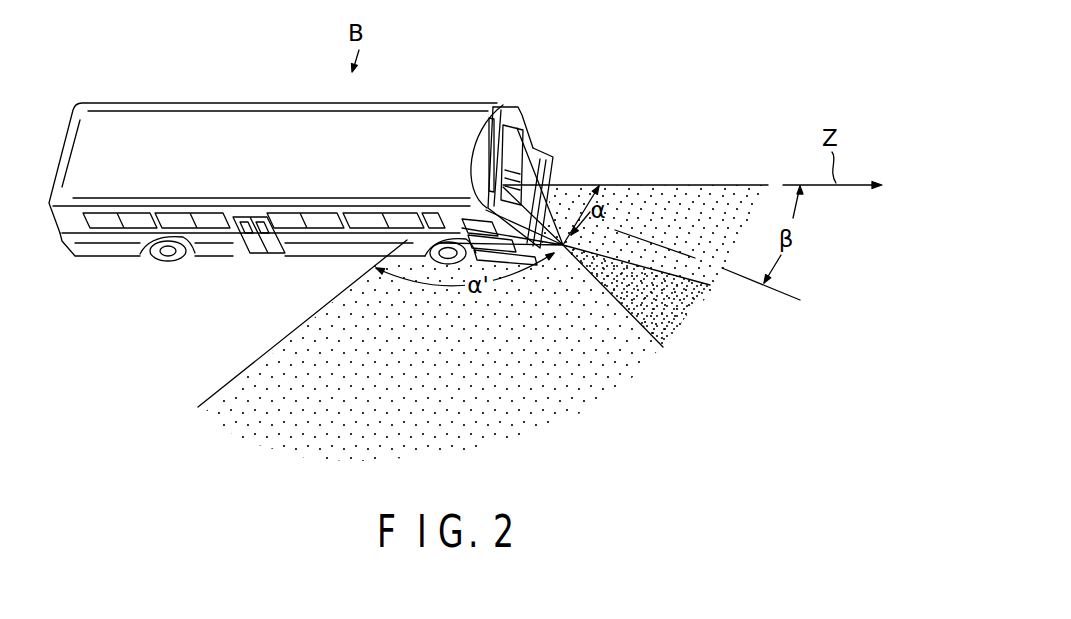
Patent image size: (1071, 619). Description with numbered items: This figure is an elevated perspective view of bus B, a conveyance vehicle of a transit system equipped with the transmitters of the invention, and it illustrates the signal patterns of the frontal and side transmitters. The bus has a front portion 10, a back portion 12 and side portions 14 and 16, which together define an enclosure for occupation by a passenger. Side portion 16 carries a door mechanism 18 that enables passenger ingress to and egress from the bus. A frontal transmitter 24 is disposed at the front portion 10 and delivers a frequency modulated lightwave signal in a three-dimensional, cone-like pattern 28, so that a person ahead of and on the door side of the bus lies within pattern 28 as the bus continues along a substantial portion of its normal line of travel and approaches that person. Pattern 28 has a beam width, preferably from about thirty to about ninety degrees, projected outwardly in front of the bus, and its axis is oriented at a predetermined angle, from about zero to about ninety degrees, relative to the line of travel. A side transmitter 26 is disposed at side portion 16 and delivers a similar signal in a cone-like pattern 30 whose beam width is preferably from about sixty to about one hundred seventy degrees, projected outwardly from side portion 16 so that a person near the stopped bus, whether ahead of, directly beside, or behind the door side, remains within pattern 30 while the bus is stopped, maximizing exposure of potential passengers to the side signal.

The front portion 10 is at (523, 127).
The back portion 12 is at (54, 137).
The side portion 14 is at (463, 101).
The side portion 16 is at (225, 238).
The door mechanism 18 is at (497, 106).
The frontal transmitter 24 is at (505, 186).
The side transmitter 26 is at (442, 212).
The three-dimensional pattern 28 is at (720, 202).
The three-dimensional pattern 30 is at (245, 410).